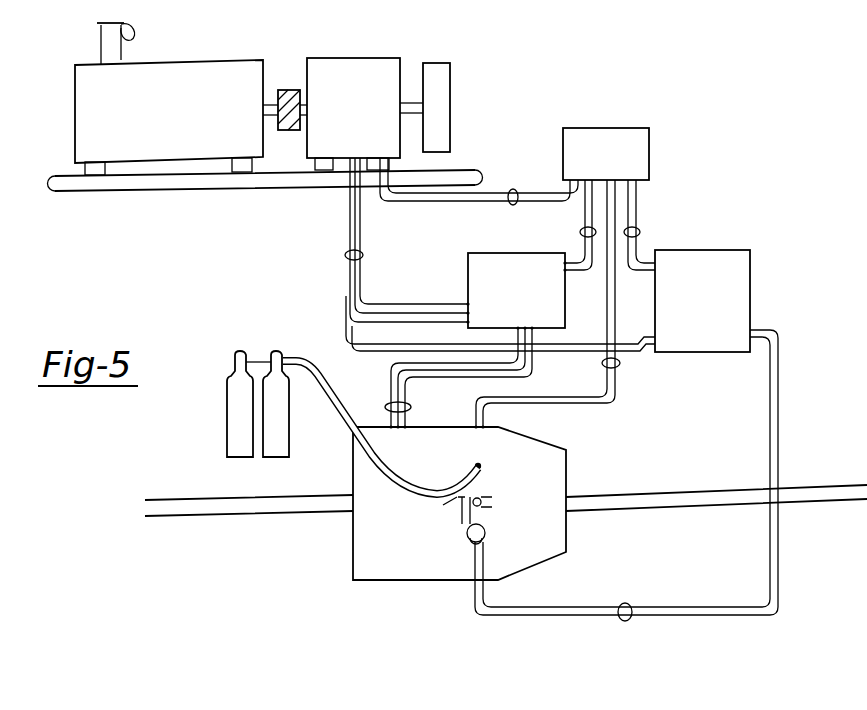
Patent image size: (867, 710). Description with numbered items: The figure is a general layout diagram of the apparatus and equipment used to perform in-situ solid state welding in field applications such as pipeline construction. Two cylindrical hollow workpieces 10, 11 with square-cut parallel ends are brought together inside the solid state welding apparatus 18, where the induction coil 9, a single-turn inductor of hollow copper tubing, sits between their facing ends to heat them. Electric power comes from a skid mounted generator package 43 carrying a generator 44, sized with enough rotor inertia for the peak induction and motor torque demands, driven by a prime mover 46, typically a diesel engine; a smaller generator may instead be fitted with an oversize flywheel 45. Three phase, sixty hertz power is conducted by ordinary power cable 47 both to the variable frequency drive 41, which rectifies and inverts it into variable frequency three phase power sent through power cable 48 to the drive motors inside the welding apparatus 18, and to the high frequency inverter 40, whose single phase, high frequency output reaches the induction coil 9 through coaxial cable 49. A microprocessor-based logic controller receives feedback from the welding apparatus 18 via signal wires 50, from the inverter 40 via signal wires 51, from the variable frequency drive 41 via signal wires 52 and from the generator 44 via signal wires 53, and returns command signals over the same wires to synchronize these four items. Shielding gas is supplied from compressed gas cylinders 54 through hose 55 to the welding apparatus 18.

The induction coil 9 is at (482, 490).
The workpiece 10 is at (288, 513).
The workpiece 11 is at (680, 508).
The solid state welding apparatus 18 is at (417, 537).
The high frequency inverter 40 is at (718, 304).
The variable frequency drive 41 is at (532, 301).
The generator package 43 is at (231, 181).
The generator 44 is at (370, 108).
The flywheel 45 is at (451, 73).
The prime mover 46 is at (166, 117).
The power cable 47 is at (345, 253).
The power cable 48 is at (412, 406).
The coaxial cable 49 is at (630, 604).
The signal wires 50 is at (620, 365).
The signal wires 51 is at (641, 232).
The signal wires 52 is at (581, 232).
The signal wires 53 is at (512, 189).
The compressed gas cylinders 54 is at (272, 351).
The hose 55 is at (348, 438).